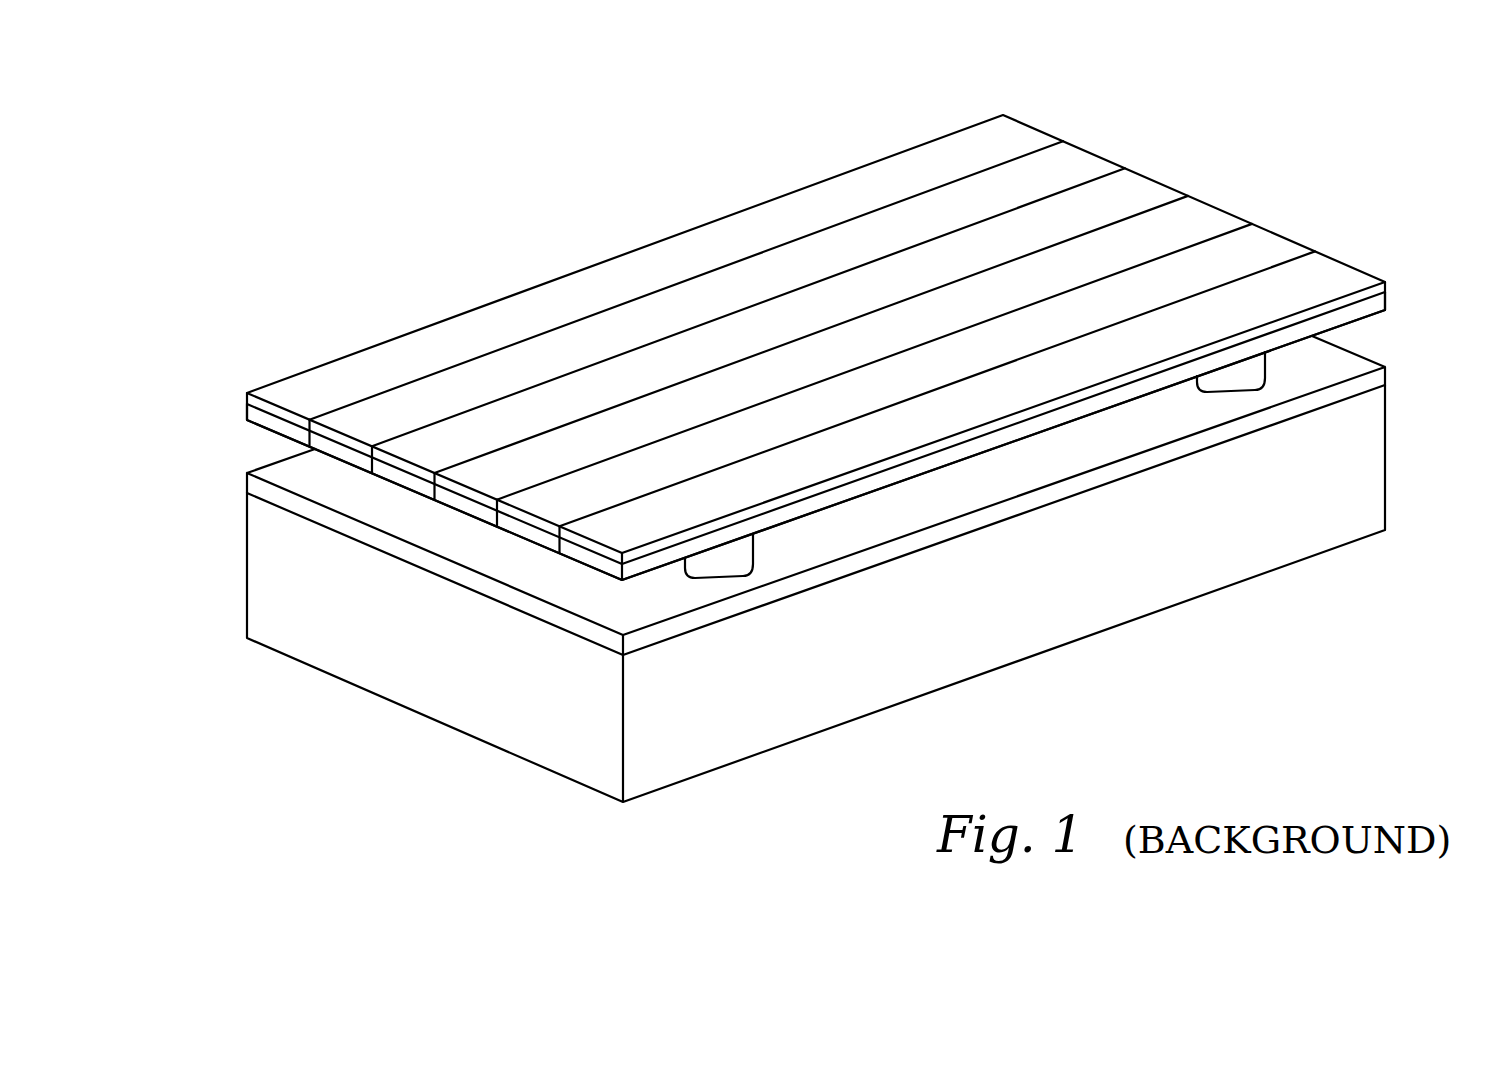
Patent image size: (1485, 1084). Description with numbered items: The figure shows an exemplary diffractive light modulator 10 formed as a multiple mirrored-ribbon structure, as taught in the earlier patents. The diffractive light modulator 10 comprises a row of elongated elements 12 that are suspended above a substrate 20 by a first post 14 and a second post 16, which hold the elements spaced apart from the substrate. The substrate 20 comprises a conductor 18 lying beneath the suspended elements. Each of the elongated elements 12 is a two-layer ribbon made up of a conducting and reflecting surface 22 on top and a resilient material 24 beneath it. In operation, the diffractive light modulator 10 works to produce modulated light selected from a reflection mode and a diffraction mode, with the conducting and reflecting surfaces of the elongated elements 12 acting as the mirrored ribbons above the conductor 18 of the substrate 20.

The diffractive light modulator 10 is at (262, 362).
The elongated elements 12 is at (433, 352).
The first post 14 is at (727, 562).
The second post 16 is at (1238, 380).
The conductor 18 is at (1040, 495).
The substrate 20 is at (1355, 453).
The conducting and reflecting surface 22 is at (242, 390).
The resilient material 24 is at (242, 407).